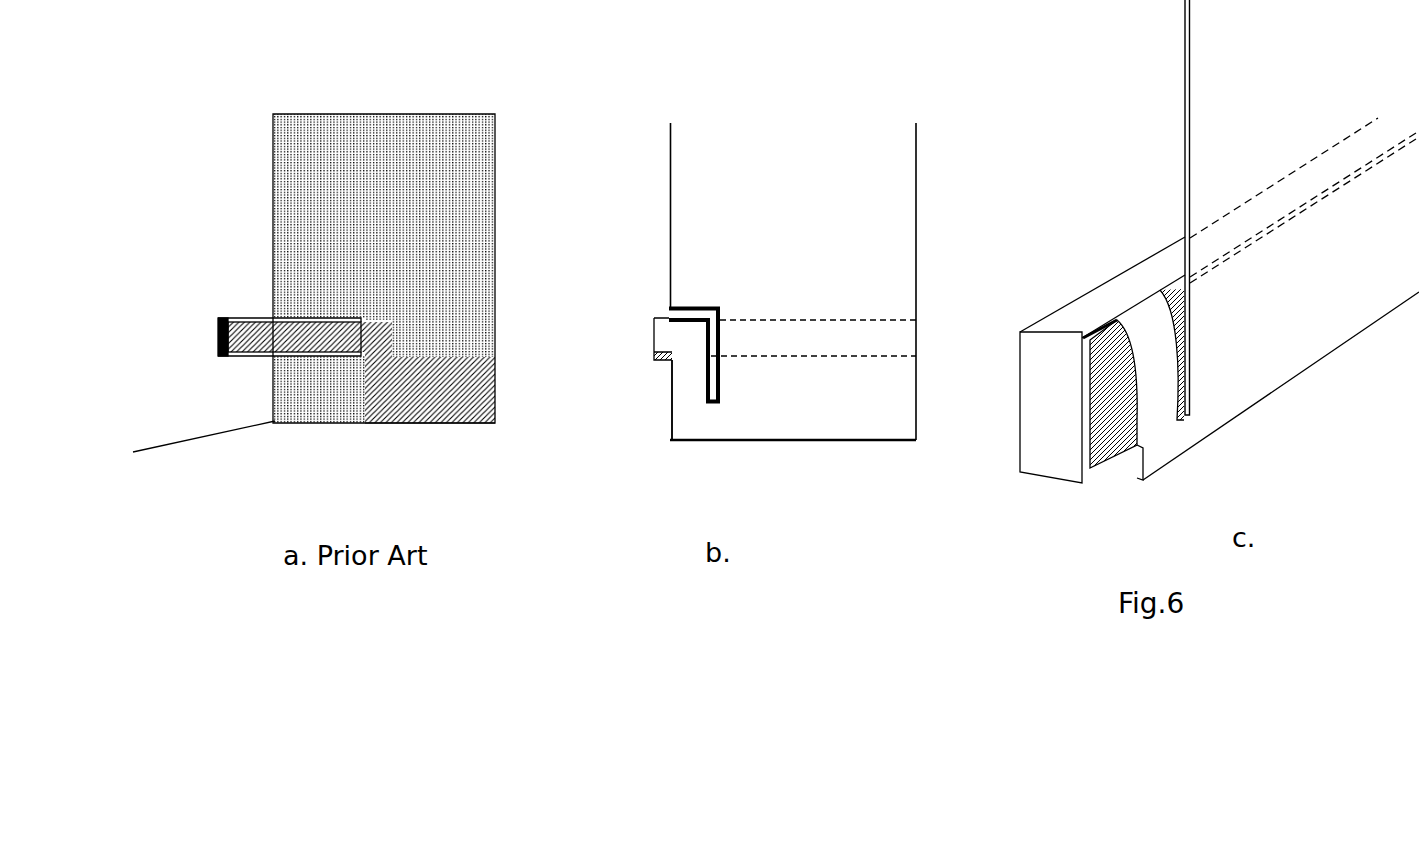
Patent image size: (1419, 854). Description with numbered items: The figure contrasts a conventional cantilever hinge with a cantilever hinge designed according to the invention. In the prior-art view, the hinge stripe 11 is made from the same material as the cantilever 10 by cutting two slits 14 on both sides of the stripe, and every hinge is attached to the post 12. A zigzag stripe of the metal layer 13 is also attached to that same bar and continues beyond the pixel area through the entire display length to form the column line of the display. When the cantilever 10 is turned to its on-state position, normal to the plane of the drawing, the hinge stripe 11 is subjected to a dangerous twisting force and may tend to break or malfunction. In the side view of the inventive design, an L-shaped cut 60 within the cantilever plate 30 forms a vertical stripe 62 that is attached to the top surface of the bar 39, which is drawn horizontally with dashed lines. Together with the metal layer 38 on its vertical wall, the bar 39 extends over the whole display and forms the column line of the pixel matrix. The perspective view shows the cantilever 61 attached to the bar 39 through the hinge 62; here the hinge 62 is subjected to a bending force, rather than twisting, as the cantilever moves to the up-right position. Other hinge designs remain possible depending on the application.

In FIG. 6a, the cantilever 10 is at (302, 207).
In FIG. 6a, the hinge stripe 11 is at (302, 331).
In FIG. 6a, the post 12 is at (217, 324).
In FIG. 6a, the metal layer 13 is at (388, 372).
In FIG. 6a, the slits 14 is at (267, 313).
In FIG. 6b, the cantilever plate 30 is at (715, 186).
In FIG. 6b, the metal layer 38 is at (850, 355).
In FIG. 6c, the metal layer 38 is at (1108, 450).
In FIG. 6b, the bar 39 is at (647, 335).
In FIG. 6c, the bar 39 is at (1038, 389).
In FIG. 6b, the L-shaped cut 60 is at (668, 317).
In FIG. 6b, the cantilever 61 is at (810, 387).
In FIG. 6c, the cantilever 61 is at (1284, 328).
In FIG. 6b, the vertical stripe 62 is at (690, 373).
In FIG. 6c, the vertical stripe 62 is at (1153, 428).